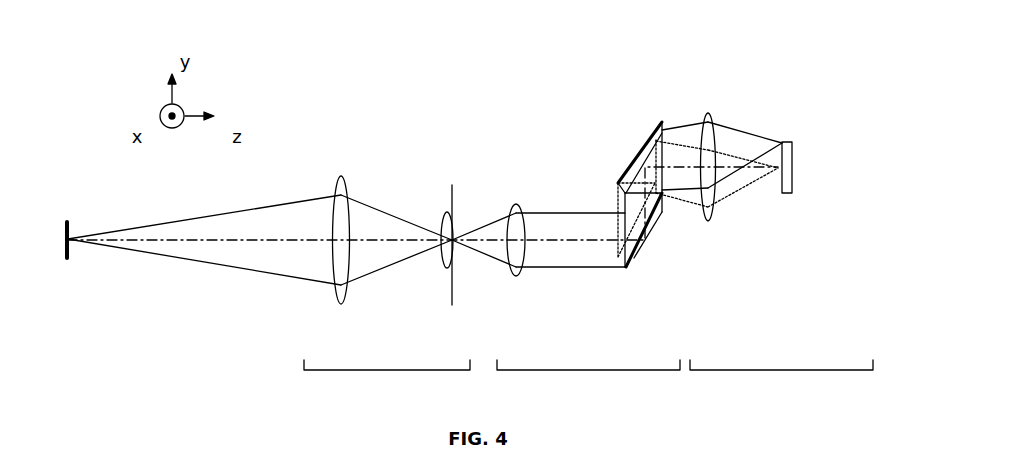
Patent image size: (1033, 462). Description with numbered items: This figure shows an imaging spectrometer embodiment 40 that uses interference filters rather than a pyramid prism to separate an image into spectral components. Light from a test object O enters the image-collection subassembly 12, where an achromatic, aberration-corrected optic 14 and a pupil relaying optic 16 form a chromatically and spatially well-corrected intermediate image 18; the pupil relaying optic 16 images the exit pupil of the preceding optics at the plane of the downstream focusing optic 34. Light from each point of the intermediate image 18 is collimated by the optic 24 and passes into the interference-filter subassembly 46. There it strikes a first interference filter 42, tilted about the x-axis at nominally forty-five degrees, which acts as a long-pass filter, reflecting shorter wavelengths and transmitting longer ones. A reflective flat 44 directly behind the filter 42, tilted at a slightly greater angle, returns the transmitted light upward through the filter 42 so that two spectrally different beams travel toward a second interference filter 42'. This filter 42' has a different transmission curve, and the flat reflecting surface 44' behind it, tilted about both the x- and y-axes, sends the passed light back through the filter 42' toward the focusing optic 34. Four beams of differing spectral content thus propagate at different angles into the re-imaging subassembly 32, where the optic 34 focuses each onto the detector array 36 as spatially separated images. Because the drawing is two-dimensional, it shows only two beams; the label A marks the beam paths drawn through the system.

The imaging spectrometer embodiment 40 is at (810, 87).
The image-collection subassembly 12 is at (345, 365).
The achromatic optic 14 is at (333, 188).
The pupil relaying optic 16 is at (438, 218).
The intermediate image 18 is at (460, 220).
The collimating optic 24 is at (523, 210).
The first interference filter 42 is at (615, 205).
The second interference filter 42' is at (673, 111).
The reflective flat 44 is at (662, 237).
The flat reflecting surface 44' is at (622, 164).
The interference-filter subassembly 46 is at (572, 368).
The re-imaging subassembly 32 is at (763, 368).
The focusing optic 34 is at (717, 117).
The detector array 36 is at (795, 153).
The test object O is at (75, 250).
The beam cross-section axis A is at (565, 247).